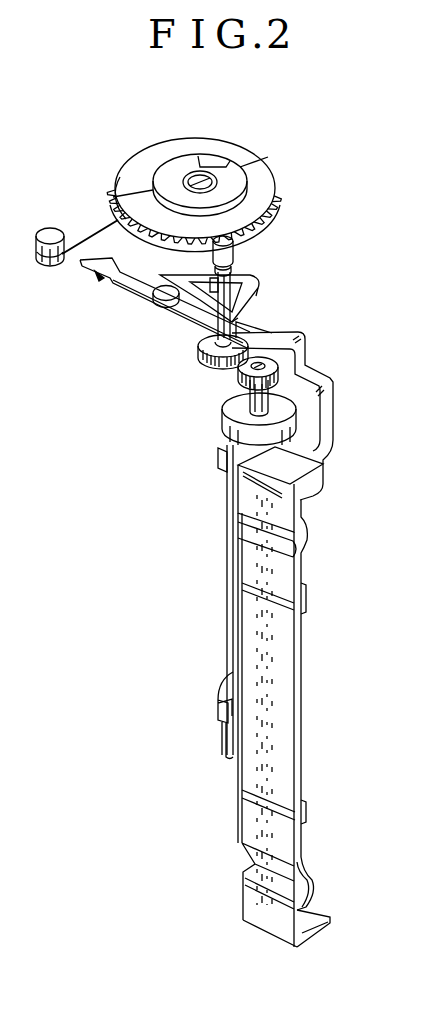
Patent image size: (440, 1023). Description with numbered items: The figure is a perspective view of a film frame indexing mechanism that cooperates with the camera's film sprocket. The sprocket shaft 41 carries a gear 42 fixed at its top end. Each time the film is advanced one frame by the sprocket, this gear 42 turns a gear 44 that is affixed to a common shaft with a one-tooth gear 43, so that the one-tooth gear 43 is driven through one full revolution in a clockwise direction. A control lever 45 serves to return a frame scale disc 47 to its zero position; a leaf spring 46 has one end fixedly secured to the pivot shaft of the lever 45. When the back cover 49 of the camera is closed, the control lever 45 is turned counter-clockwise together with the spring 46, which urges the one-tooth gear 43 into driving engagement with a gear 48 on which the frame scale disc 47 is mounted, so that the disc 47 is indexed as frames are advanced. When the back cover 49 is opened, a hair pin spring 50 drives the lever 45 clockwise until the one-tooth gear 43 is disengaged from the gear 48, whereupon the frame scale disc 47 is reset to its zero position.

The sprocket shaft 41 is at (250, 407).
The gear 42 is at (238, 371).
The one-tooth gear 43 is at (233, 243).
The gear 44 is at (200, 346).
The control lever 45 is at (303, 449).
The leaf spring 46 is at (258, 299).
The frame scale disc 47 is at (193, 142).
The gear 48 is at (258, 188).
The back cover 49 is at (248, 638).
The hair pin spring 50 is at (72, 262).